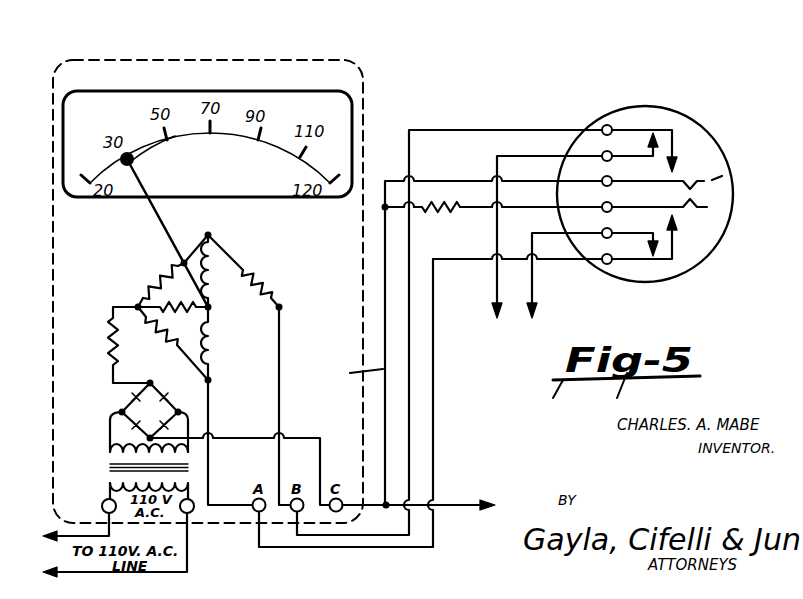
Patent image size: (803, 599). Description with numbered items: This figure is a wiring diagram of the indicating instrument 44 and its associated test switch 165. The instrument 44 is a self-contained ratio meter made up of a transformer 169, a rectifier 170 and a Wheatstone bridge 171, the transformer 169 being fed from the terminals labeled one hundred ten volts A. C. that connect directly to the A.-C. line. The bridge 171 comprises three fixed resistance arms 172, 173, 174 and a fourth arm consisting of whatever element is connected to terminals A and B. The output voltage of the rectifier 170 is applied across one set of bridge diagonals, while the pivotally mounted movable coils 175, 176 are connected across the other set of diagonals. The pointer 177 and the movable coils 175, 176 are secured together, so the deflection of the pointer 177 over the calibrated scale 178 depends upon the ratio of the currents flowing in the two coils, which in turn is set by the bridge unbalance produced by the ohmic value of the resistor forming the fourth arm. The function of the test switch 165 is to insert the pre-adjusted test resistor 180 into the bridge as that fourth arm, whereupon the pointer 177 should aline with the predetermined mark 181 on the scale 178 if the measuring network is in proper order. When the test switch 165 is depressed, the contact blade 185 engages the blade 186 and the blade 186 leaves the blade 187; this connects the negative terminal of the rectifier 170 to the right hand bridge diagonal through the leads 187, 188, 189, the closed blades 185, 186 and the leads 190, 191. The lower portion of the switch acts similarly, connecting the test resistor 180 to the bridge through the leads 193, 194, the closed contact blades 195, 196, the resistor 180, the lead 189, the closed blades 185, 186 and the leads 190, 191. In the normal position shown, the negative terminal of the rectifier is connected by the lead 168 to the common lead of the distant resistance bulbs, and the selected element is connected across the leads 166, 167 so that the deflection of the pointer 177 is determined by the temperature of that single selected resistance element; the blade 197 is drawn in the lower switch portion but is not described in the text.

The indicating instrument 44 is at (318, 60).
The test switch 165 is at (603, 119).
The lead 166 is at (534, 281).
The lead 167 is at (490, 275).
The lead 168 is at (451, 507).
The transformer 169 is at (108, 478).
The rectifier 170 is at (128, 395).
The Wheatstone bridge 171 is at (250, 317).
The fixed resistance arm 172 is at (158, 332).
The fixed resistance arm 173 is at (155, 272).
The fixed resistance arm 174 is at (258, 275).
The movable coil 175 is at (215, 262).
The movable coil 176 is at (214, 345).
The pointer 177 is at (162, 227).
The calibrated scale 178 is at (154, 143).
The test resistor 180 is at (447, 214).
The scale mark 181 is at (263, 138).
The contact blade 185 is at (727, 173).
The contact blade 186 is at (675, 140).
The lead 187 is at (336, 423).
The lead 188 is at (383, 369).
The lead 189 is at (458, 181).
The lead 190 is at (517, 130).
The lead 191 is at (281, 330).
The lead 193 is at (213, 413).
The lead 194 is at (434, 432).
The contact blade 195 is at (675, 243).
The contact blade 196 is at (710, 206).
The contact arrow 197 is at (655, 229).